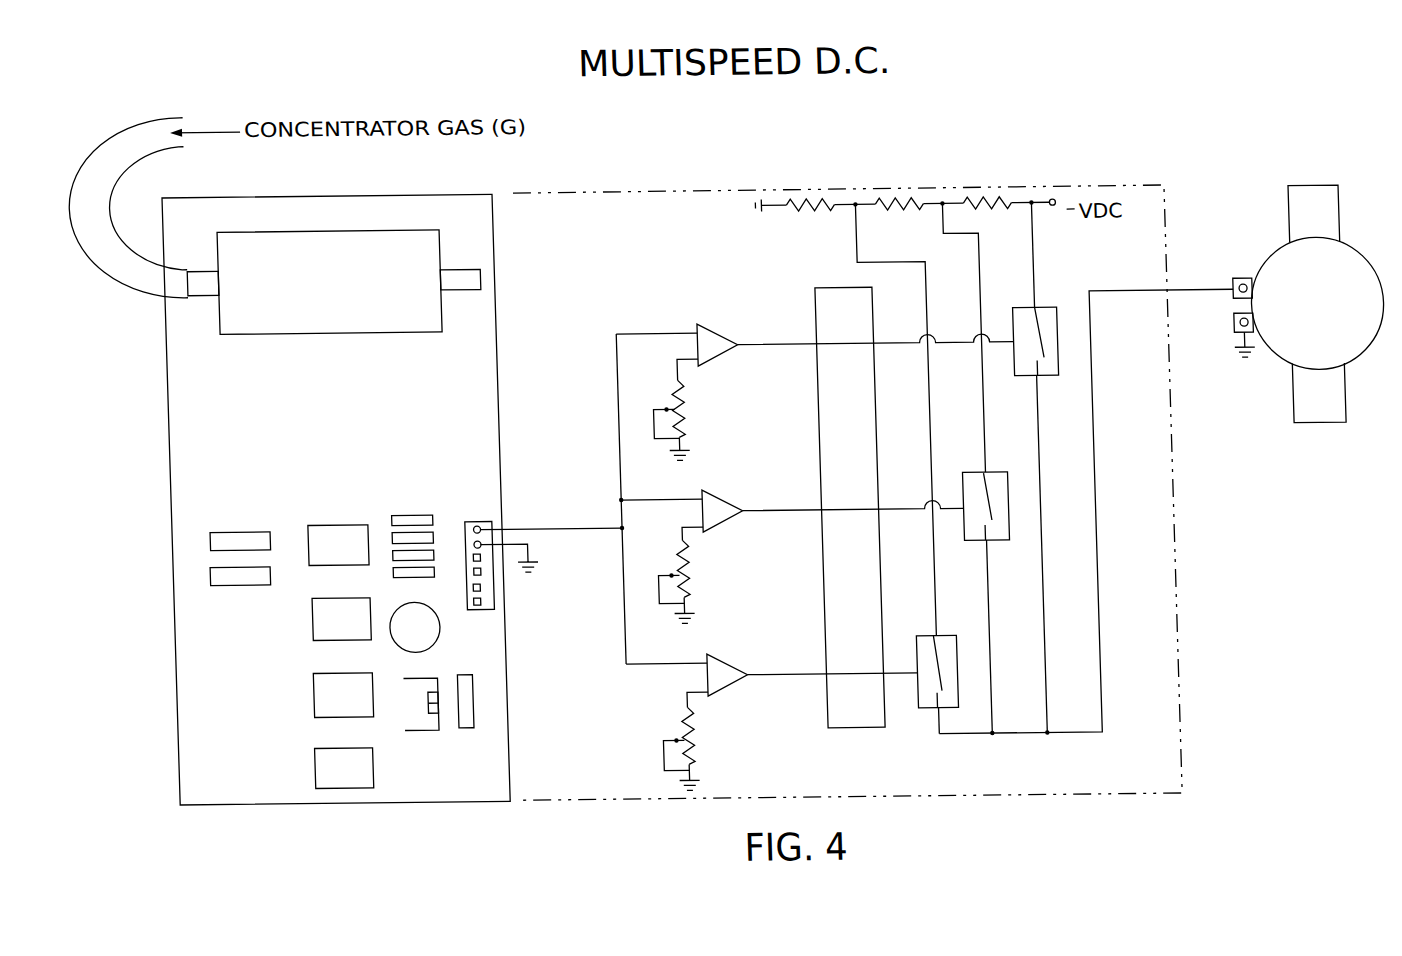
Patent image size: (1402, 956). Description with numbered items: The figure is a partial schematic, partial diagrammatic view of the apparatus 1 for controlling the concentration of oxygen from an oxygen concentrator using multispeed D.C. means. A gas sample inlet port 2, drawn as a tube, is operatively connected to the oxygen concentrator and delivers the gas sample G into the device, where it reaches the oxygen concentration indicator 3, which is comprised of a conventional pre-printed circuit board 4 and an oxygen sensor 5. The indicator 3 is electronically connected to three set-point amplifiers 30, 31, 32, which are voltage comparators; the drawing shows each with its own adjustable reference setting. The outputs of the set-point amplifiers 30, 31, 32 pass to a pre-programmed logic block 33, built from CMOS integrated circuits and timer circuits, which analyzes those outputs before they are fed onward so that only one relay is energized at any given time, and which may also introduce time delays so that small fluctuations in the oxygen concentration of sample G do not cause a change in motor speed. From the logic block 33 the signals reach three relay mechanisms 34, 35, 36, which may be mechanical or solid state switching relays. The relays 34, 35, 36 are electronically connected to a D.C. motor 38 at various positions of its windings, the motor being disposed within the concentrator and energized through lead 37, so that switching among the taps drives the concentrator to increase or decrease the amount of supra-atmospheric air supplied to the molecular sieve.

The apparatus for controlling the concentration of oxygen 1 is at (593, 195).
The gas sample inlet port 2 is at (108, 179).
The oxygen concentration indicator 3 is at (493, 384).
The pre-printed circuit board 4 is at (460, 451).
The oxygen sensor 5 is at (418, 278).
The set-point amplifier 30 is at (710, 341).
The set-point amplifier 31 is at (711, 501).
The set-point amplifier 32 is at (718, 667).
The pre-programmed logic block 33 is at (847, 738).
The relay mechanism 34 is at (1047, 317).
The relay mechanism 35 is at (992, 488).
The relay mechanism 36 is at (963, 619).
The lead 37 is at (1086, 729).
The D.C. motor 38 is at (1346, 253).